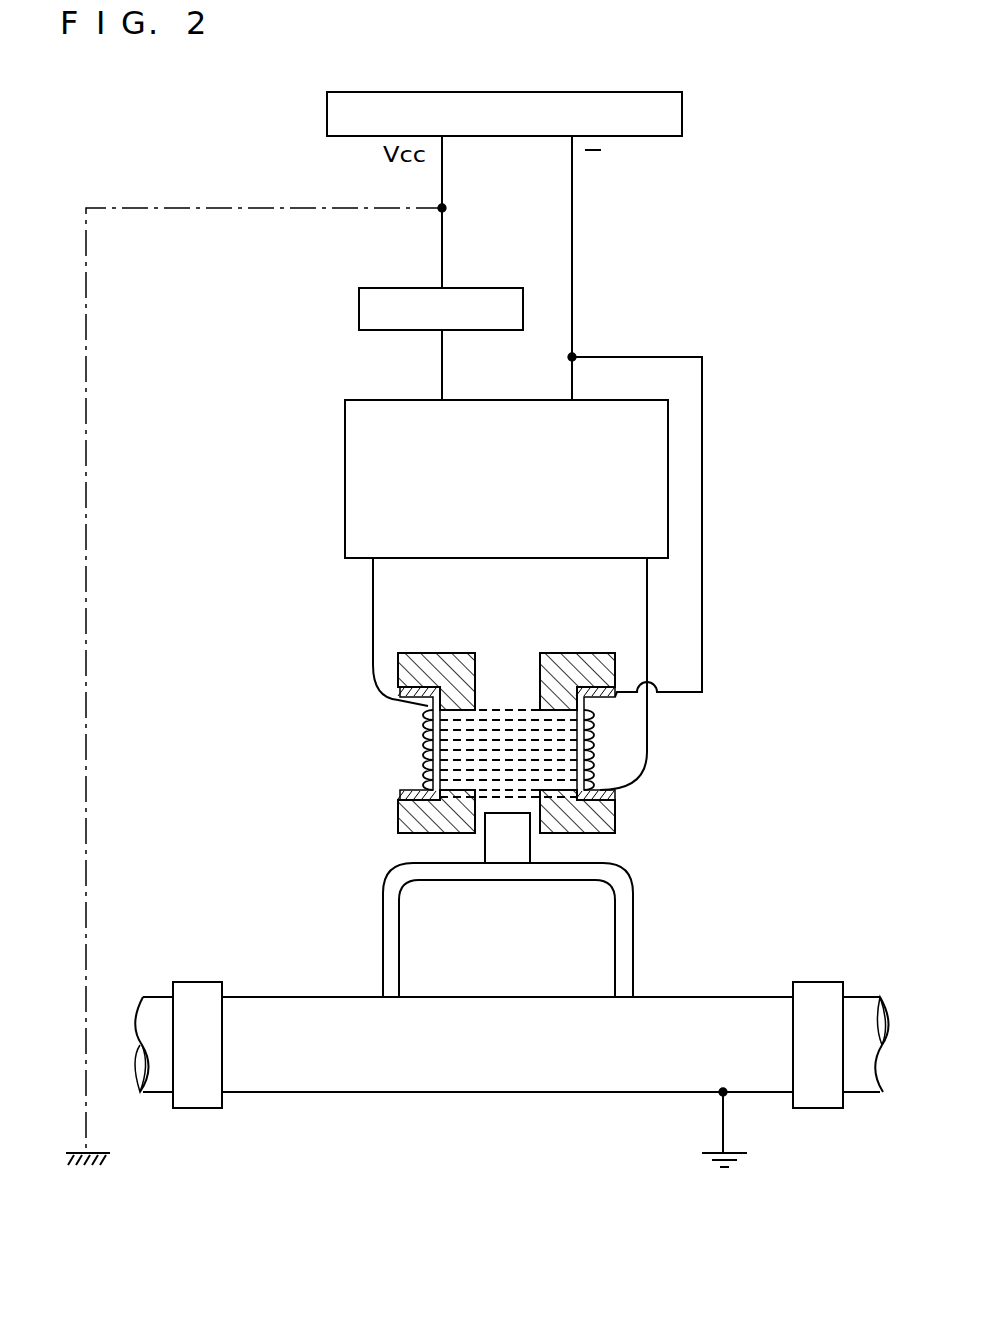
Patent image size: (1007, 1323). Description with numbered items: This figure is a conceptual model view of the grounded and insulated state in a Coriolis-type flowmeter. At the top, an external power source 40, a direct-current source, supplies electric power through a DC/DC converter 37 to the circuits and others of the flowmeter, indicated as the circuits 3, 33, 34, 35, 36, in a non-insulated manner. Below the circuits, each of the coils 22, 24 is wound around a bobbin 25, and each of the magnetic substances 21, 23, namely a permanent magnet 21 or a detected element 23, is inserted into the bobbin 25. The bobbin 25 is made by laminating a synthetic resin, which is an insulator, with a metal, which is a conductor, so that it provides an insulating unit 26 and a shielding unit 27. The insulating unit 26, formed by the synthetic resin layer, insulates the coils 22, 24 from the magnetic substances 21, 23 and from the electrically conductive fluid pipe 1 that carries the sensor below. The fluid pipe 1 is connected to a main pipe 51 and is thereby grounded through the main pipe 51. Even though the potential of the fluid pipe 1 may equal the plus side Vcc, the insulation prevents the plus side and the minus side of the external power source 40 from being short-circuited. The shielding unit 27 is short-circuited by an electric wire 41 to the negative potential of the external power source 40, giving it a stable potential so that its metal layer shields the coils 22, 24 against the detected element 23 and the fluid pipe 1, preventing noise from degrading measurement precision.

The external power source 40 is at (504, 114).
The DC/DC converter 37 is at (441, 309).
The circuits 3 is at (506, 479).
The circuit 33 is at (506, 479).
The circuit 34 is at (506, 479).
The circuit 35 is at (506, 479).
The circuit 36 is at (506, 479).
The electric wire 41 is at (702, 590).
The insulating unit 26 is at (565, 653).
The shielding unit 27 is at (600, 795).
The coil 22 is at (586, 753).
The coil 24 is at (597, 737).
The bobbin 25 is at (573, 728).
The permanent magnet 21 is at (529, 879).
The detected element 23 is at (508, 857).
The fluid pipe 1 is at (383, 925).
The main pipe 51 is at (412, 1078).